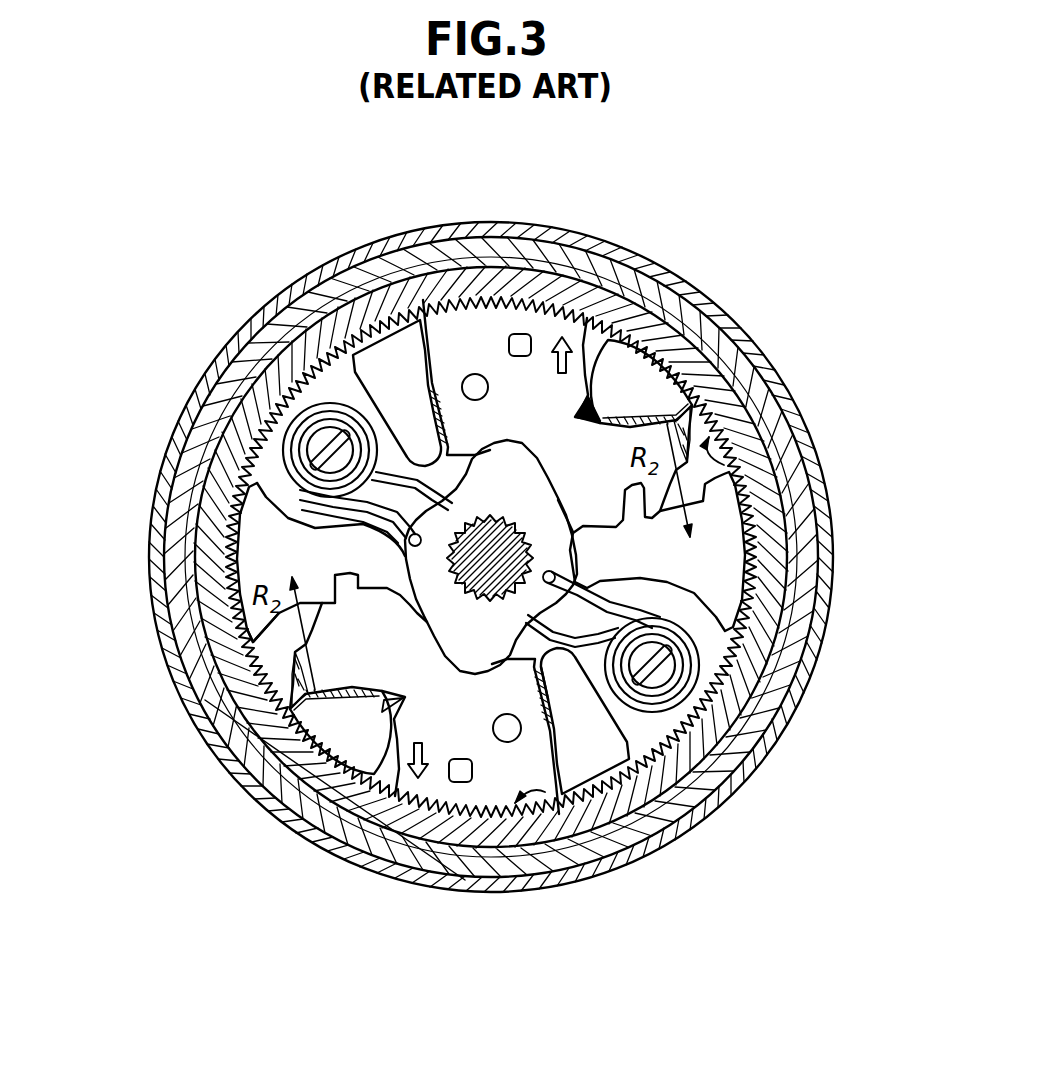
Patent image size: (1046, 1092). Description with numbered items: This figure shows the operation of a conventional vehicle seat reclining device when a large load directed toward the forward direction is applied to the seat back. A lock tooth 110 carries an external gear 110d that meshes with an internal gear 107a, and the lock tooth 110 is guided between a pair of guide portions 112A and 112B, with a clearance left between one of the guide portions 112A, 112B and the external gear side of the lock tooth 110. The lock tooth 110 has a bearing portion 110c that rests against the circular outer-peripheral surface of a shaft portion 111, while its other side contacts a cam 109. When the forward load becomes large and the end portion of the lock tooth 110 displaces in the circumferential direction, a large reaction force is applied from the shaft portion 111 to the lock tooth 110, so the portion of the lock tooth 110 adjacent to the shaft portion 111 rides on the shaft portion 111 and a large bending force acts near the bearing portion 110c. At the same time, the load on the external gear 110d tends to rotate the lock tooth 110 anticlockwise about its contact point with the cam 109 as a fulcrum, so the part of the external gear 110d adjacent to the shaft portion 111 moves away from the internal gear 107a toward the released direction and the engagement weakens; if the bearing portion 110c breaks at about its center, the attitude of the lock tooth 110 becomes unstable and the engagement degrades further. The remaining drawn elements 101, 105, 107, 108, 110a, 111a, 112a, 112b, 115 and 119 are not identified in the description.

The rotary damper / one-way clutch assembly 101 is at (843, 622).
The housing ring 105 is at (688, 283).
The internal ring gear 107 is at (590, 262).
The internal gear 107a is at (724, 440).
The outer casing 108 is at (757, 310).
The cam 109 is at (532, 507).
The lock tooth 110 is at (607, 460).
The pawl side surface 110a is at (388, 578).
The bearing portion 110c is at (392, 750).
The external gear 110d is at (507, 742).
The shaft portion 111 is at (655, 405).
The pawl tooth engaging face 111a is at (347, 684).
The guide portion 112A is at (735, 580).
The guide portion 112B is at (422, 367).
The first guide surface 112a is at (345, 588).
The second guide surface 112b is at (526, 709).
The splined shaft 115 is at (508, 558).
The spiral spring 119 is at (331, 412).